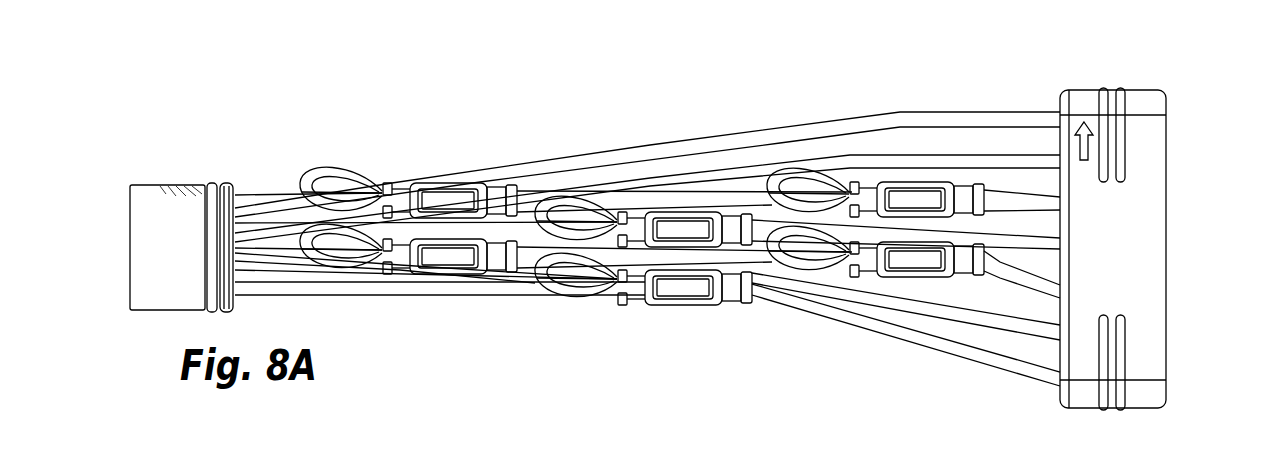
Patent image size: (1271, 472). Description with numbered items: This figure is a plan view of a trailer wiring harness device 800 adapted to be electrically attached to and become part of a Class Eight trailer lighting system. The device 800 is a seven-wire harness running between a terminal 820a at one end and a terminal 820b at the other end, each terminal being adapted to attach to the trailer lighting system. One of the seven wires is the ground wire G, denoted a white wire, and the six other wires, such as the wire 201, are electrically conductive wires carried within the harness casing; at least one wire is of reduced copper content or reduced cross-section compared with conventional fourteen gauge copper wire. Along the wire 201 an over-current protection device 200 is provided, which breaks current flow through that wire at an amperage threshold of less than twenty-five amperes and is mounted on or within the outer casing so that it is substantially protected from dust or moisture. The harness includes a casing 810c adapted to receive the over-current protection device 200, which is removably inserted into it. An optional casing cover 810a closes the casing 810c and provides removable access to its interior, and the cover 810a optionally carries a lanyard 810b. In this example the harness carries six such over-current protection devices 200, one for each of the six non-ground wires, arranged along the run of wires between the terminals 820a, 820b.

The trailer wiring harness device 800 is at (579, 129).
The ground wire G is at (707, 148).
The terminal 820a is at (150, 233).
The terminal 820b is at (1143, 188).
The casing cover 810a is at (712, 308).
The lanyard 810b is at (557, 293).
The casing 810c is at (730, 290).
The over-current protection device 200 is at (666, 288).
The wire 201 is at (885, 322).